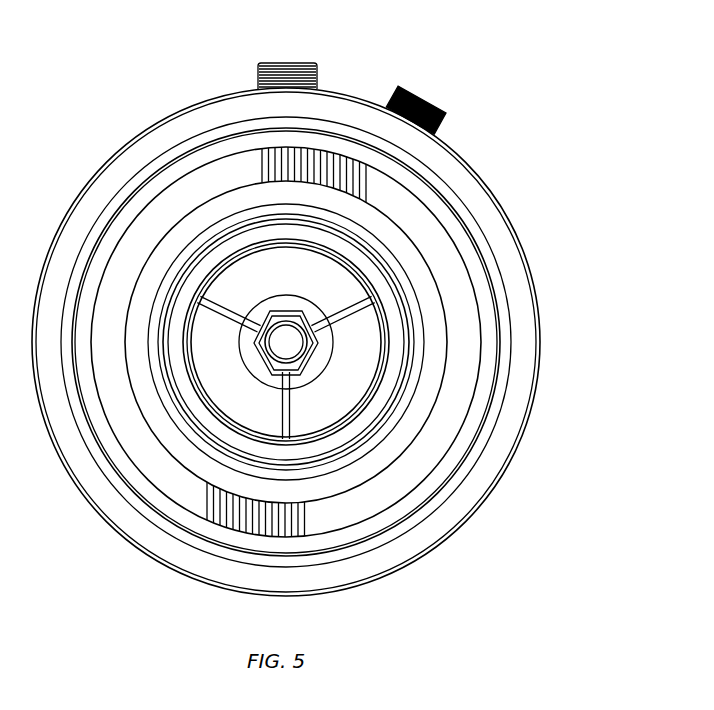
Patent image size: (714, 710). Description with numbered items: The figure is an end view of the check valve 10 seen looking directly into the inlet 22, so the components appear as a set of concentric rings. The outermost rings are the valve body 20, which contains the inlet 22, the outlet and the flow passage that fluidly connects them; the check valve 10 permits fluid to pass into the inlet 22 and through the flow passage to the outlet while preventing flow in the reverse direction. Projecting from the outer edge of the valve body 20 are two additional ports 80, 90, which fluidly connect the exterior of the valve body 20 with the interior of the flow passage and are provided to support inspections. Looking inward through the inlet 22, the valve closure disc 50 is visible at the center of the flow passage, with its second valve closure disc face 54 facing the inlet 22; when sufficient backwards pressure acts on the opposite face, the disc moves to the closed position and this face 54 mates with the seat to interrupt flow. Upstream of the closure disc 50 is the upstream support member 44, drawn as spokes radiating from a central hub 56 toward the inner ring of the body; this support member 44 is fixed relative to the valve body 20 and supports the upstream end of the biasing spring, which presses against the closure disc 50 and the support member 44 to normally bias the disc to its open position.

The check valve 10 is at (563, 201).
The valve body 20 is at (520, 378).
The inlet 22 is at (323, 413).
The upstream support member 44 is at (287, 432).
The valve closure disc 50 is at (304, 287).
The second valve closure disc face 54 is at (254, 411).
The center post 56 is at (298, 357).
The port 80 is at (422, 100).
The port 90 is at (293, 64).